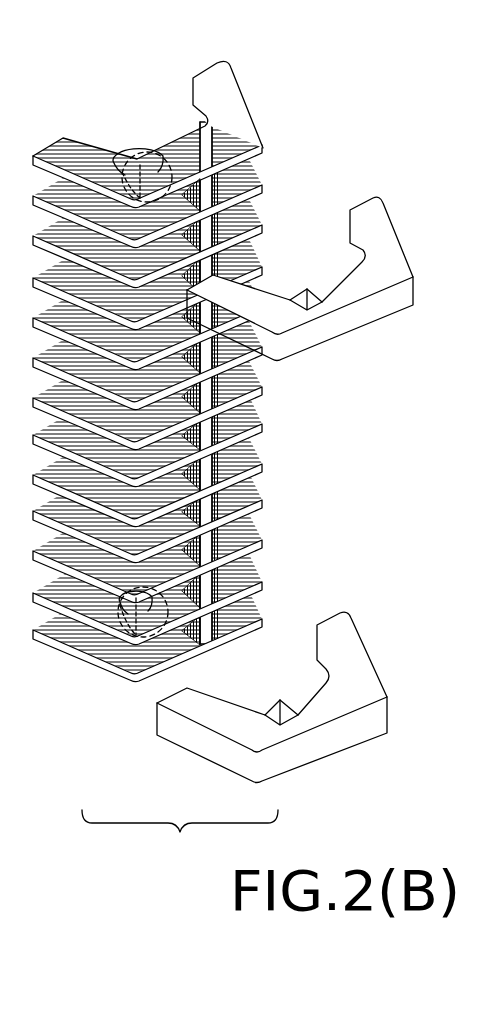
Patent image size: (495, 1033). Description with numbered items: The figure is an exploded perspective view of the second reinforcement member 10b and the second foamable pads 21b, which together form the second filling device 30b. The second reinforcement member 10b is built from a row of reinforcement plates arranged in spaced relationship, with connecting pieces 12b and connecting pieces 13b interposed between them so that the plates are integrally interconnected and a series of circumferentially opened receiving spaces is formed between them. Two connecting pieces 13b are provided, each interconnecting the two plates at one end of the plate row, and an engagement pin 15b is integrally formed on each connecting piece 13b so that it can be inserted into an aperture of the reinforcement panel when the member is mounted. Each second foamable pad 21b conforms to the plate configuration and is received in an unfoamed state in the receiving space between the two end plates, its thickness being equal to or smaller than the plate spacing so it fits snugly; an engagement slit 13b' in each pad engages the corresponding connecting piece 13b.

The second reinforcement member 10b is at (266, 117).
The connecting pieces 12b is at (203, 371).
The connecting piece 13b is at (129, 401).
The engagement slit 13b' is at (286, 469).
The engagement pin 15b is at (139, 130).
The second foamable pad 21b is at (309, 489).
The second filling device 30b is at (180, 842).